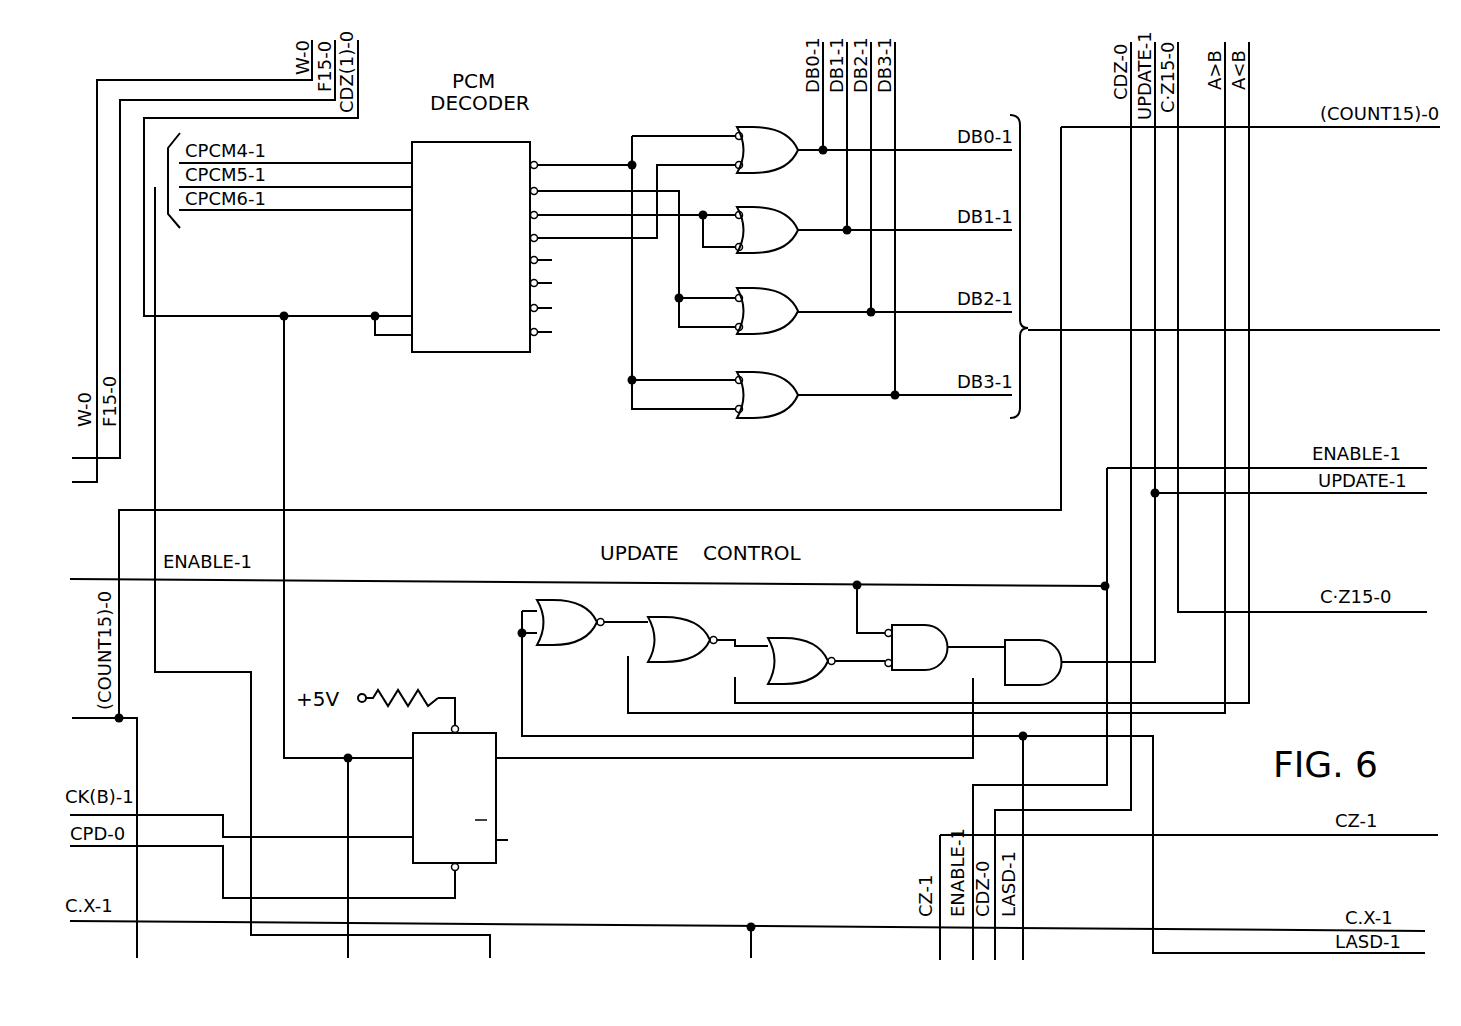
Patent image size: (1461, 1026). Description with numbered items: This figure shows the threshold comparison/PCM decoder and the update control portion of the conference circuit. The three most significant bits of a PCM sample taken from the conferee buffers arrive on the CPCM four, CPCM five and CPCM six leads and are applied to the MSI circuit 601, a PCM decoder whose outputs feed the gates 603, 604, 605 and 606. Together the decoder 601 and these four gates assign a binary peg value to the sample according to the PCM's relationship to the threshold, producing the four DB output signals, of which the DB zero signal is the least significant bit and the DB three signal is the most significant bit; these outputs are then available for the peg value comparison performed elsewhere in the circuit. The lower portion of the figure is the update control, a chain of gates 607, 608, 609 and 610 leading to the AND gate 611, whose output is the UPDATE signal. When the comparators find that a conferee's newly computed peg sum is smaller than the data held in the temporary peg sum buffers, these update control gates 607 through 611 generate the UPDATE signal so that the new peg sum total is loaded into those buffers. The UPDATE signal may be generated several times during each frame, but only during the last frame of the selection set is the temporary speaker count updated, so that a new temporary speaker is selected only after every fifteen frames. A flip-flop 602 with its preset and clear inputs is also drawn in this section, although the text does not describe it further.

The MSI circuit 601 is at (511, 142).
The D flip-flop 602 is at (478, 864).
The AND gate 603 is at (763, 127).
The AND gate 604 is at (775, 207).
The AND gate 605 is at (780, 288).
The AND gate 606 is at (780, 372).
The update control gate 607 is at (575, 602).
The update control gate 608 is at (680, 617).
The update control gate 609 is at (787, 638).
The update control gate 610 is at (918, 625).
The AND gate 611 is at (1027, 640).